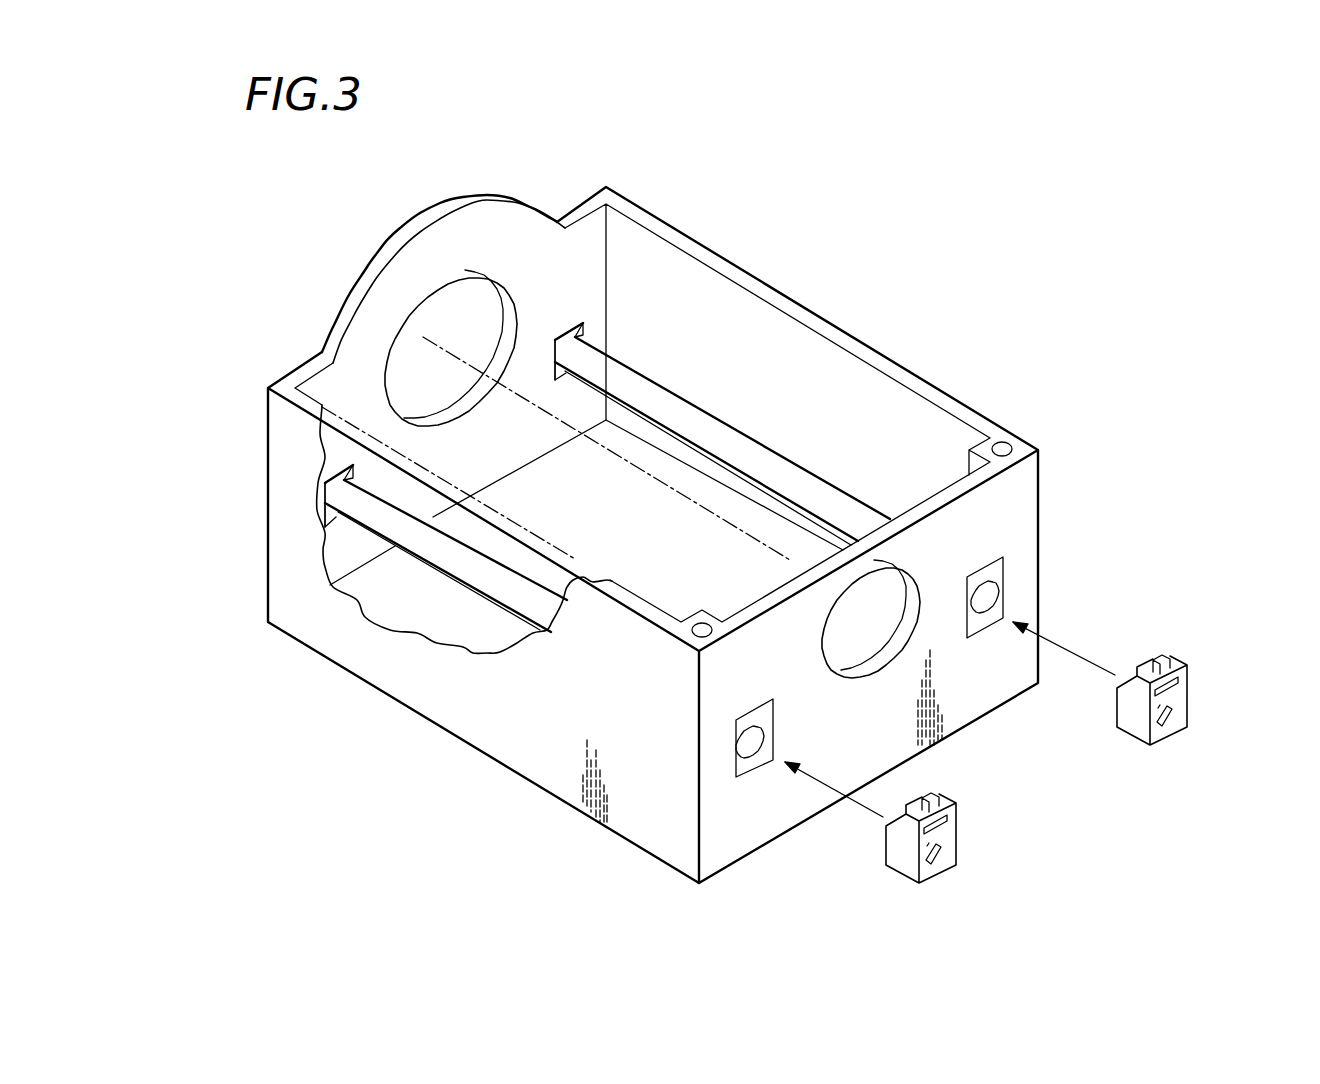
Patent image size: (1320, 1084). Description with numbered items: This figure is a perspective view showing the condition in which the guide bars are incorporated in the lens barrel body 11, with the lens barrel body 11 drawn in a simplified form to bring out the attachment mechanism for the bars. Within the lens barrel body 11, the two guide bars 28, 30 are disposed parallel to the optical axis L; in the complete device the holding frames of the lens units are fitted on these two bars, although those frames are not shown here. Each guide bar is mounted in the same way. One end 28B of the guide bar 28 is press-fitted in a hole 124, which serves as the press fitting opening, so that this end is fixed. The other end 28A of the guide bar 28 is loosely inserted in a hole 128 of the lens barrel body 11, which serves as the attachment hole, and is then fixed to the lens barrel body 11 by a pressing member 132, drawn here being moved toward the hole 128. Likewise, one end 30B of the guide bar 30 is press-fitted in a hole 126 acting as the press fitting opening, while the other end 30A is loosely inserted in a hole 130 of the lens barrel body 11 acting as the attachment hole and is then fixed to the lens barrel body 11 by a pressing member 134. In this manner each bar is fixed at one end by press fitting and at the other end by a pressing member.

The lens barrel body 11 is at (934, 370).
The guide bar 28 is at (713, 410).
The other end of guide bar 28 28A is at (985, 598).
The one end of guide bar 28 28B is at (572, 348).
The guide bar 30 is at (462, 574).
The other end of guide bar 30 30A is at (750, 743).
The one end of guide bar 30 30B is at (343, 493).
The hole (press fitting opening) 124 is at (583, 332).
The hole (press fitting opening) 126 is at (325, 530).
The hole (attachment hole) 128 is at (1007, 572).
The hole (attachment hole) 130 is at (737, 763).
The pressing member 132 is at (1187, 632).
The pressing member 134 is at (978, 817).
The optical axis L is at (450, 350).